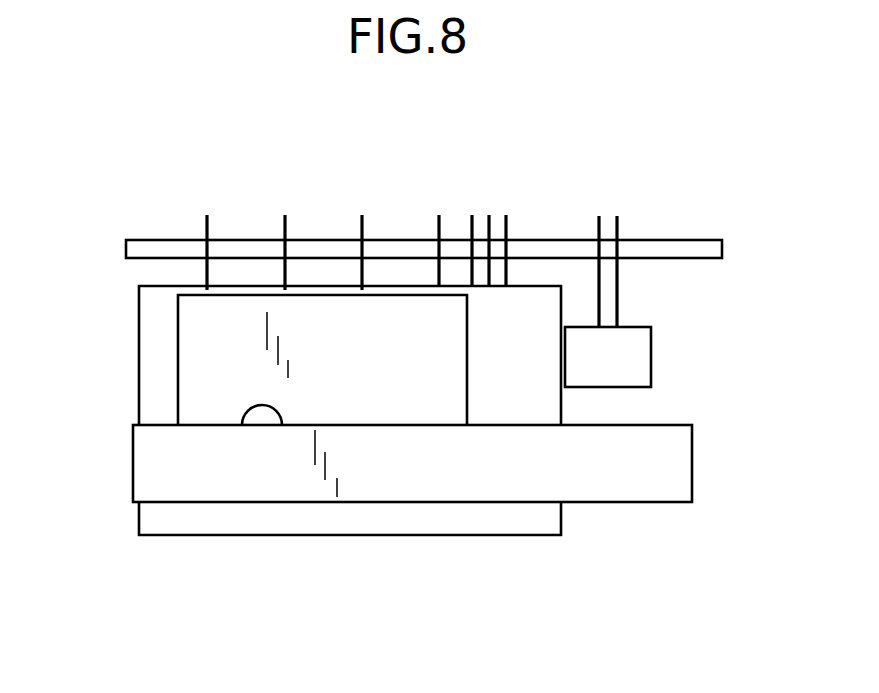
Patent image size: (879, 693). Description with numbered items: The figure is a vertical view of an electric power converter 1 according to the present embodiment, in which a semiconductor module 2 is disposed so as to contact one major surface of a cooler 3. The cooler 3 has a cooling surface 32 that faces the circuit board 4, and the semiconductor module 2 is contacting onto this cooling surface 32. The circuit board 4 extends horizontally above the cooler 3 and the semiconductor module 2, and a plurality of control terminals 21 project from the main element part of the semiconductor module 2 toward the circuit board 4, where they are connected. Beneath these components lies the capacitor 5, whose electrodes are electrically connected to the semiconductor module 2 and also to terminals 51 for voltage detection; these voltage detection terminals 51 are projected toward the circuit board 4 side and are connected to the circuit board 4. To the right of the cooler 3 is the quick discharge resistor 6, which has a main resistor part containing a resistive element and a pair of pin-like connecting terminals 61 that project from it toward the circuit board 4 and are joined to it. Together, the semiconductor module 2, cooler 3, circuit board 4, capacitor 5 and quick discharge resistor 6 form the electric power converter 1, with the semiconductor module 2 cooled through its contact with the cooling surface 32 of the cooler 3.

The electric power converter 1 is at (120, 577).
The semiconductor module 2 is at (407, 373).
The cooler 3 is at (452, 475).
The circuit board 4 is at (545, 247).
The capacitor 5 is at (536, 522).
The quick discharge resistor 6 is at (637, 353).
The control terminals 21 is at (281, 225).
The cooling surface 32 is at (281, 425).
The voltage detection terminals 51 is at (490, 218).
The connecting terminals 61 is at (618, 228).